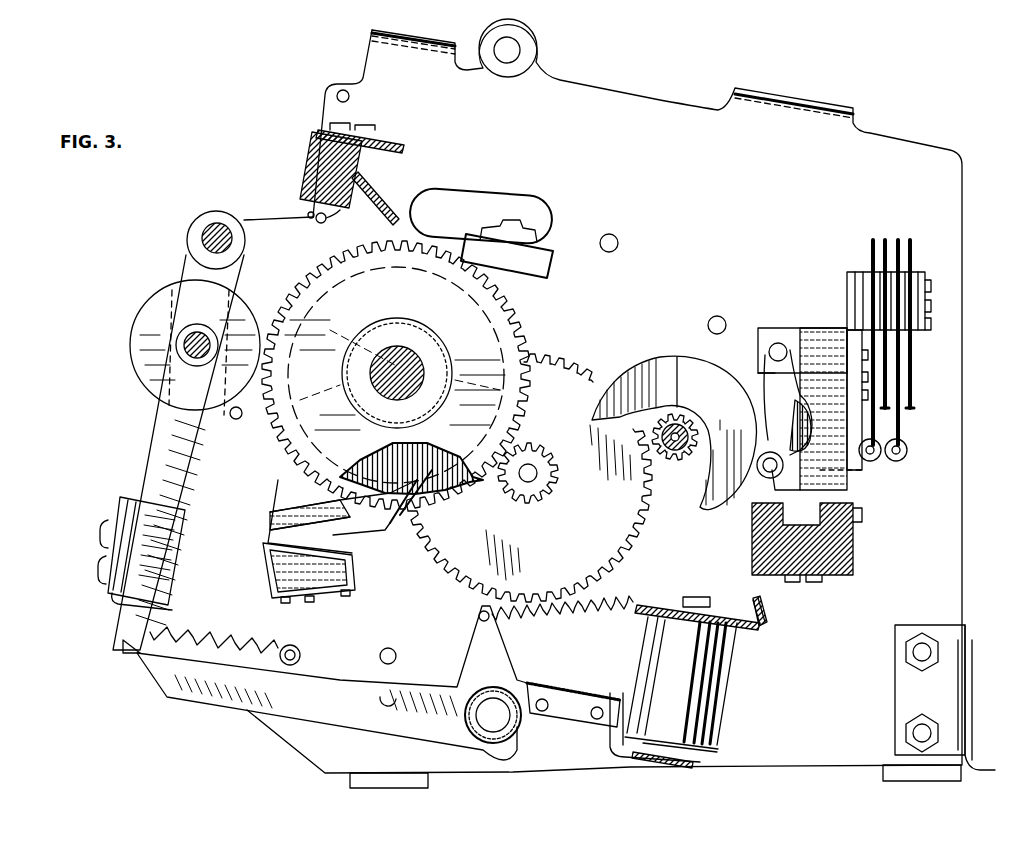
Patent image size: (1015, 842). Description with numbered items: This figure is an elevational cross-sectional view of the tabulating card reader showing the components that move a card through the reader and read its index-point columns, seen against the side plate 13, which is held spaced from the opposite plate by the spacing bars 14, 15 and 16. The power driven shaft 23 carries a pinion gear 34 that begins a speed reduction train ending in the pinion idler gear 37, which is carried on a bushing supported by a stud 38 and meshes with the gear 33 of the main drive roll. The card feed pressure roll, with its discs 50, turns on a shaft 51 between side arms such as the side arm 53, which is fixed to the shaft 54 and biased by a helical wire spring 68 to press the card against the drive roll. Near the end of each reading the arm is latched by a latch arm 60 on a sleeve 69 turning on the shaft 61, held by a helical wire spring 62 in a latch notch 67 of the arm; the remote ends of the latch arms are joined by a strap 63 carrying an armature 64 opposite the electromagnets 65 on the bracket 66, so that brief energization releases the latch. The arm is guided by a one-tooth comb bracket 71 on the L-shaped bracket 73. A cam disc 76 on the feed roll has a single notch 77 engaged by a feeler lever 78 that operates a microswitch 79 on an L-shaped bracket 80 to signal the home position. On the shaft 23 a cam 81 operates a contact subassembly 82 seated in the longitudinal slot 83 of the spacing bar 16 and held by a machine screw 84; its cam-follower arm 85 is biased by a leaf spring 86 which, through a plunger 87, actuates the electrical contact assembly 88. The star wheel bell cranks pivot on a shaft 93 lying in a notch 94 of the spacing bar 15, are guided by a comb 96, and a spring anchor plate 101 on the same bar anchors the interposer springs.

The side plate 13 is at (950, 250).
The spacing bar 14 is at (548, 263).
The spacing bar 15 is at (315, 183).
The spacing bar 16 is at (853, 555).
The power driven shaft 23 is at (677, 360).
The gear 33 is at (520, 330).
The pinion gear 34 is at (676, 460).
The pinion idler gear 37 is at (548, 487).
The stud 38 is at (540, 462).
The discs 50 is at (140, 358).
The shaft 51 is at (185, 335).
The side arm 53 is at (160, 422).
The shaft 54 is at (216, 225).
The latch arm 60 is at (232, 703).
The shaft 61 is at (493, 722).
The helical wire spring 62 is at (572, 615).
The strap 63 is at (608, 752).
The armature 64 is at (692, 765).
The electromagnets 65 is at (720, 672).
The bracket 66 is at (765, 622).
The latch notch 67 is at (125, 660).
The helical wire spring 68 is at (207, 632).
The sleeve 69 is at (518, 720).
The one-tooth comb bracket 71 is at (112, 605).
The L-shaped bracket 73 is at (163, 572).
The cam disc 76 is at (447, 480).
The notch 77 is at (392, 525).
The feeler lever 78 is at (372, 540).
The microswitch 79 is at (333, 570).
The L-shaped bracket 80 is at (278, 488).
The cam 81 is at (728, 377).
The contact subassembly 82 is at (810, 330).
The longitudinal slot 83 is at (853, 530).
The machine screw 84 is at (818, 583).
The cam-follower arm 85 is at (770, 478).
The leaf spring 86 is at (795, 400).
The plunger 87 is at (852, 478).
The electrical contact assembly 88 is at (898, 375).
The shaft 93 is at (335, 222).
The notch 94 is at (310, 213).
The comb 96 is at (375, 198).
The spring anchor plate 101 is at (398, 133).